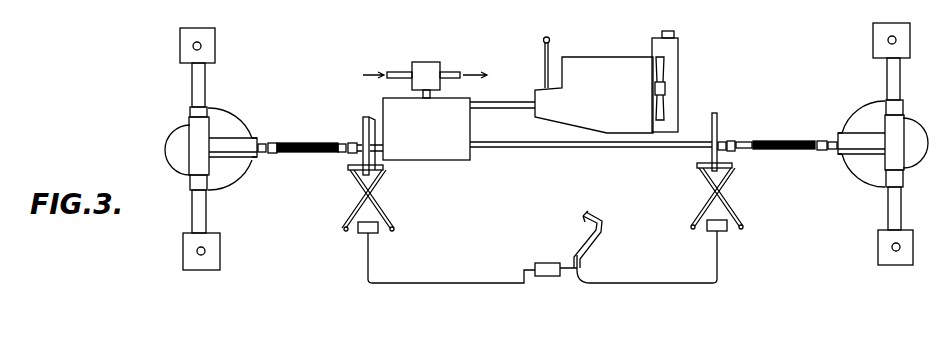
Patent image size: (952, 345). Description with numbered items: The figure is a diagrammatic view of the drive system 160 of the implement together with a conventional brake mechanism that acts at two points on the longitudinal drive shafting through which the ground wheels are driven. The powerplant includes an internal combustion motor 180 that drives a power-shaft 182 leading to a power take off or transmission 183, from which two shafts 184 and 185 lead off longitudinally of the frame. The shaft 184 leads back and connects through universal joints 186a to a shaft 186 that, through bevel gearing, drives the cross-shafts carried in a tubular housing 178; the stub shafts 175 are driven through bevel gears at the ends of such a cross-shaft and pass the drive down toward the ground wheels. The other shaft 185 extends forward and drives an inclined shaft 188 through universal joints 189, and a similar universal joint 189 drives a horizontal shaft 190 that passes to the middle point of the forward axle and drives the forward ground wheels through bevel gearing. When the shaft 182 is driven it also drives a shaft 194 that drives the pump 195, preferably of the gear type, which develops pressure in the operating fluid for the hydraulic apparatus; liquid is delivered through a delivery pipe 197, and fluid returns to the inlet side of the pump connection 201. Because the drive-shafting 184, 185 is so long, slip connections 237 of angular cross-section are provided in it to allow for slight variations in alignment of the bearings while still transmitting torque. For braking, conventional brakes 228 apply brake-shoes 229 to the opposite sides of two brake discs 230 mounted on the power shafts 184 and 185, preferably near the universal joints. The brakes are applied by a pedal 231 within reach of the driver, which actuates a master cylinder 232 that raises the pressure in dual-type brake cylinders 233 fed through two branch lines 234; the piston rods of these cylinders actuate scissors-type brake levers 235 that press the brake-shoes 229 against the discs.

The drive and power system 160 is at (378, 4).
The stub shaft 175 is at (193, 46).
The tubular housing 178 is at (192, 76).
The internal combustion motor 180 is at (603, 60).
The power-shaft 182 is at (484, 109).
The power take off or transmission 183 is at (460, 160).
The shaft 184 is at (375, 120).
The shaft 185 is at (577, 151).
The shaft 186 is at (257, 136).
The universal joints 186a is at (268, 142).
The inclined shaft 188 is at (753, 140).
The universal joints 189 is at (725, 141).
The horizontal shaft 190 is at (840, 155).
The shaft 194 is at (440, 96).
The pump 195 is at (427, 62).
The delivery pipe 197 is at (450, 71).
The inlet side of the pump connection 201 is at (402, 71).
The brakes 228 is at (378, 200).
The brake-shoes 229 is at (345, 154).
The brake discs 230 is at (362, 122).
The pedal 231 is at (598, 220).
The master cylinder 232 is at (540, 263).
The dual-type brake cylinders 233 is at (372, 233).
The branch lines 234 is at (407, 283).
The scissors-type brake levers 235 is at (357, 210).
The slip connection 237 is at (283, 155).